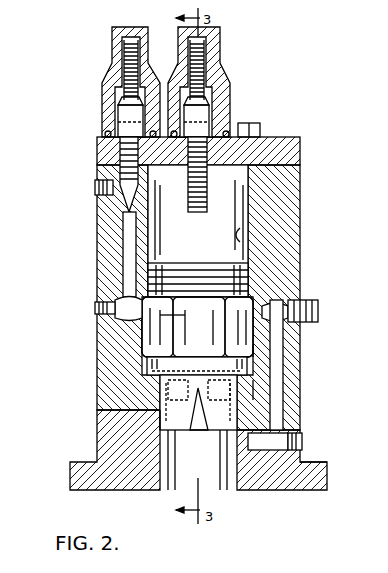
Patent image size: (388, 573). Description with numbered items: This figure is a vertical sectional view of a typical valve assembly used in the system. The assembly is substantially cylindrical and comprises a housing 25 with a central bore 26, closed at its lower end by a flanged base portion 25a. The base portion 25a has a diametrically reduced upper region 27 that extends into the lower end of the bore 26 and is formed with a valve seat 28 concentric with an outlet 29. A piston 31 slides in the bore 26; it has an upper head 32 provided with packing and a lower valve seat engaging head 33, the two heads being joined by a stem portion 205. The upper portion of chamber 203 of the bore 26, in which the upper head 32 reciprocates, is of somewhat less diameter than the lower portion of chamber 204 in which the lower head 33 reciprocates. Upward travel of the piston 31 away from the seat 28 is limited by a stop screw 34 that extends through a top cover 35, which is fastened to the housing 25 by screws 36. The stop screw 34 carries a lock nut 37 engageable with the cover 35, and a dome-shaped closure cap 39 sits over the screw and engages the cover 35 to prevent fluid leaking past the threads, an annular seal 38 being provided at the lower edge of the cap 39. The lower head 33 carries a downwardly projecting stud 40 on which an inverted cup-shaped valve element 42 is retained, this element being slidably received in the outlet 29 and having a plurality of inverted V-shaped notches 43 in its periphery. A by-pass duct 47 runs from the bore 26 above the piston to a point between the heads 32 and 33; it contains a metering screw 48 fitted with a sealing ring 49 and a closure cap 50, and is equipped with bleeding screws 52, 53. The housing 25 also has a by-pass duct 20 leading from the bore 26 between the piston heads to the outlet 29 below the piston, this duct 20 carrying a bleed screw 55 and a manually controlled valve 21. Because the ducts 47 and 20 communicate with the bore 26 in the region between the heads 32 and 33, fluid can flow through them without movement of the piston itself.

The by-pass duct 20 is at (283, 375).
The manually controlled valve 21 is at (318, 306).
The housing 25 is at (300, 215).
The flanged base portion 25a is at (327, 478).
The central bore 26 is at (240, 235).
The diametrically reduced upper region 27 is at (253, 390).
The valve seat 28 is at (247, 365).
The outlet 29 is at (210, 478).
The piston 31 is at (175, 335).
The upper head 32 is at (142, 272).
The lower valve seat engaging head 33 is at (253, 345).
The stop screw 34 is at (197, 212).
The top cover 35 is at (300, 141).
The screws 36 is at (260, 127).
The lock nut 37 is at (205, 113).
The annular seal 38 is at (226, 131).
The dome-shaped closure cap 39 is at (220, 65).
The stud 40 is at (198, 430).
The inverted cup-shaped valve element 42 is at (160, 418).
The inverted V-shaped notches 43 is at (175, 440).
The by-pass duct 47 is at (140, 230).
The metering screw 48 is at (97, 173).
The sealing ring 49 is at (107, 135).
The closure cap 50 is at (112, 58).
The bleeding screw 52 is at (95, 187).
The bleeding screw 53 is at (95, 307).
The bleed screw 55 is at (302, 441).
The upper portion of chamber 203 is at (240, 185).
The lower portion of chamber 204 is at (160, 315).
The stem portion 205 is at (205, 305).